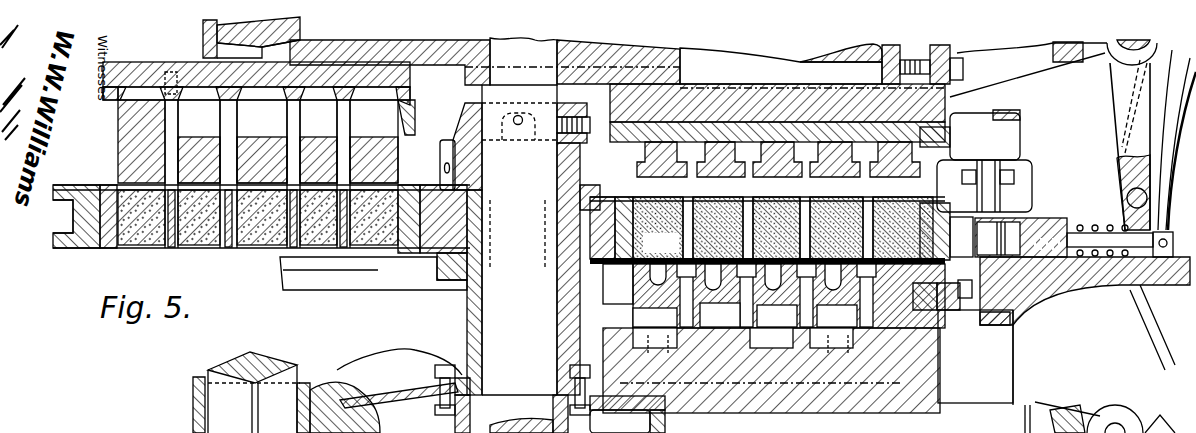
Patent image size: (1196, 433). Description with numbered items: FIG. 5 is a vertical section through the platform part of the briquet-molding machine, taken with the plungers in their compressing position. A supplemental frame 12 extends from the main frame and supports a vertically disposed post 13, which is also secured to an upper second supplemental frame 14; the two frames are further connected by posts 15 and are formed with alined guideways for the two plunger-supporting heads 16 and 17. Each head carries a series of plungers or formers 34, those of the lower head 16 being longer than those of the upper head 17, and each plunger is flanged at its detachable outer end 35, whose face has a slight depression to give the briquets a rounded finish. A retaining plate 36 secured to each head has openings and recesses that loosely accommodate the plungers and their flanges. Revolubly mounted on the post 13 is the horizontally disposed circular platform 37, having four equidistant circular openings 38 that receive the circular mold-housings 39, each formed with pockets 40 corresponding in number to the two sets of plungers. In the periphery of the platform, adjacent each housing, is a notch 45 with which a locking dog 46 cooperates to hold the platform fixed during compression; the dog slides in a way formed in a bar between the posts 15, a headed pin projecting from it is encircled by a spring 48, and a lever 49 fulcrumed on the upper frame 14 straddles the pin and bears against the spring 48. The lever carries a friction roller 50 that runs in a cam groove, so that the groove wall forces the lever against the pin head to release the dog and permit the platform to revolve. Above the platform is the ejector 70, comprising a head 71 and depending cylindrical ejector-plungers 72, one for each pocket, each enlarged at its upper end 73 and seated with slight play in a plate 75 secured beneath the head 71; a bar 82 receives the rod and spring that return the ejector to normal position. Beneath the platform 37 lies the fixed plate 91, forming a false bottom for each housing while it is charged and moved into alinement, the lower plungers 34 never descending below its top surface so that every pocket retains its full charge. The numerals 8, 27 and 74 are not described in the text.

The wheel 8 is at (1168, 163).
The supplemental frame 12 is at (1023, 405).
The post 13 is at (503, 372).
The upper second supplemental frame 14 is at (385, 50).
The posts 15 is at (1013, 372).
The plunger-supporting head 16 is at (940, 381).
The plunger-supporting head 17 is at (824, 108).
The belt 27 is at (1158, 292).
The plungers or formers 34 is at (862, 165).
The flanged outer end 35 is at (655, 126).
The retaining plate 36 is at (940, 346).
The circular platform 37 is at (478, 213).
The circular openings 38 is at (100, 248).
The mold-housings 39 is at (112, 185).
The pockets 40 is at (292, 272).
The notch 45 is at (60, 223).
The locking dog 46 is at (1023, 233).
The spring 48 is at (1102, 262).
The lever 49 is at (1150, 187).
The friction roller 50 is at (1124, 204).
The ejector 70 is at (222, 42).
The head 71 is at (143, 72).
The ejector-plungers 72 is at (405, 166).
The enlarged upper end 73 is at (121, 101).
The screw 74 is at (90, 115).
The plate 75 is at (413, 117).
The bar 82 is at (767, 230).
The fixed plate 91 is at (364, 288).